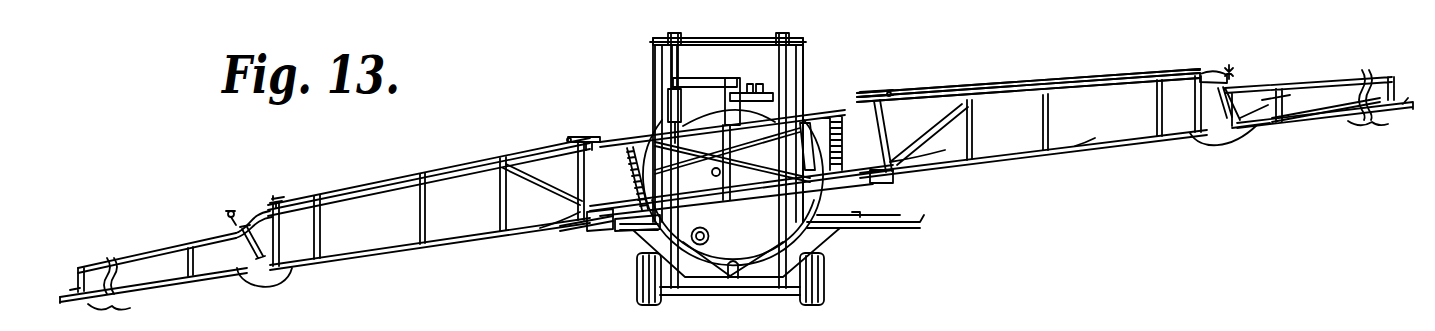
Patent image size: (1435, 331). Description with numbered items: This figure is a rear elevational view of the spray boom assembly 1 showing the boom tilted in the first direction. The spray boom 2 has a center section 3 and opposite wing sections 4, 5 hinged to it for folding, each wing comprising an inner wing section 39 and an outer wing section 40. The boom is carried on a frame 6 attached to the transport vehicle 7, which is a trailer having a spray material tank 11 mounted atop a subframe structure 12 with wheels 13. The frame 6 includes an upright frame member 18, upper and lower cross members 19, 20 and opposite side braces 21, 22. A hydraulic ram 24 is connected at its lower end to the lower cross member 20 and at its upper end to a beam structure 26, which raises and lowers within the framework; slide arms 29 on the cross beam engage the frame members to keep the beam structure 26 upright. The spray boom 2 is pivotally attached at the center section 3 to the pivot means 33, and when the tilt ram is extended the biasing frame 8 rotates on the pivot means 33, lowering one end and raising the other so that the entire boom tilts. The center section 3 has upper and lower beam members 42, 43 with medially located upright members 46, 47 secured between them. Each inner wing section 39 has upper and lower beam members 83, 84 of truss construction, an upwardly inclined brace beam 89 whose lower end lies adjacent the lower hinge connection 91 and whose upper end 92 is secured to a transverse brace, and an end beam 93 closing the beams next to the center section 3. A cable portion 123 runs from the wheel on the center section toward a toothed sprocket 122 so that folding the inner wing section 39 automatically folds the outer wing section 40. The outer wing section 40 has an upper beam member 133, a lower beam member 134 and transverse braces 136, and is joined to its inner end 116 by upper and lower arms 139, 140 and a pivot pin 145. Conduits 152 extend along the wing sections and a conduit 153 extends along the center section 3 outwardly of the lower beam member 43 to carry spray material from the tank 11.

The spray boom assembly 1 is at (615, 113).
The spray boom 2 is at (617, 140).
The center section 3 is at (808, 108).
The wing section 4 is at (380, 182).
The wing section 5 is at (1004, 92).
The frame 6 is at (773, 73).
The transport vehicle 7 is at (707, 231).
The biasing frame 8 is at (630, 145).
The spray material tank 11 is at (757, 253).
The subframe structure 12 is at (760, 290).
The wheels 13 is at (826, 275).
The upright frame member 18 is at (777, 72).
The upper cross member 19 is at (733, 38).
The lower cross member 20 is at (715, 293).
The side brace 21 is at (652, 63).
The side brace 22 is at (805, 66).
The hydraulic ram 24 is at (741, 208).
The beam structure 26 is at (733, 78).
The slide arms 29 is at (805, 197).
The pivot means 33 is at (716, 108).
The inner wing section 39 is at (382, 252).
The outer wing section 40 is at (190, 283).
The upper beam member 42 is at (832, 112).
The lower beam member 43 is at (868, 183).
The upright member 46 is at (712, 172).
The upright member 47 is at (752, 166).
The upper beam member 83 is at (472, 165).
The lower beam member 84 is at (1010, 163).
The inclined brace beam 89 is at (946, 126).
The lower hinge connection 91 is at (585, 229).
The upper end 92 is at (492, 178).
The end beam 93 is at (576, 182).
The inner end 116 is at (1213, 72).
The toothed sprocket 122 is at (280, 201).
The cable portion 123 is at (892, 92).
The upper beam member 133 is at (1338, 82).
The lower beam member 134 is at (1300, 120).
The transverse braces 136 is at (1276, 90).
The upper arm 139 is at (1228, 68).
The lower arm 140 is at (1204, 134).
The pivot pin 145 is at (228, 212).
The conduits 152 is at (270, 282).
The conduit 153 is at (610, 226).